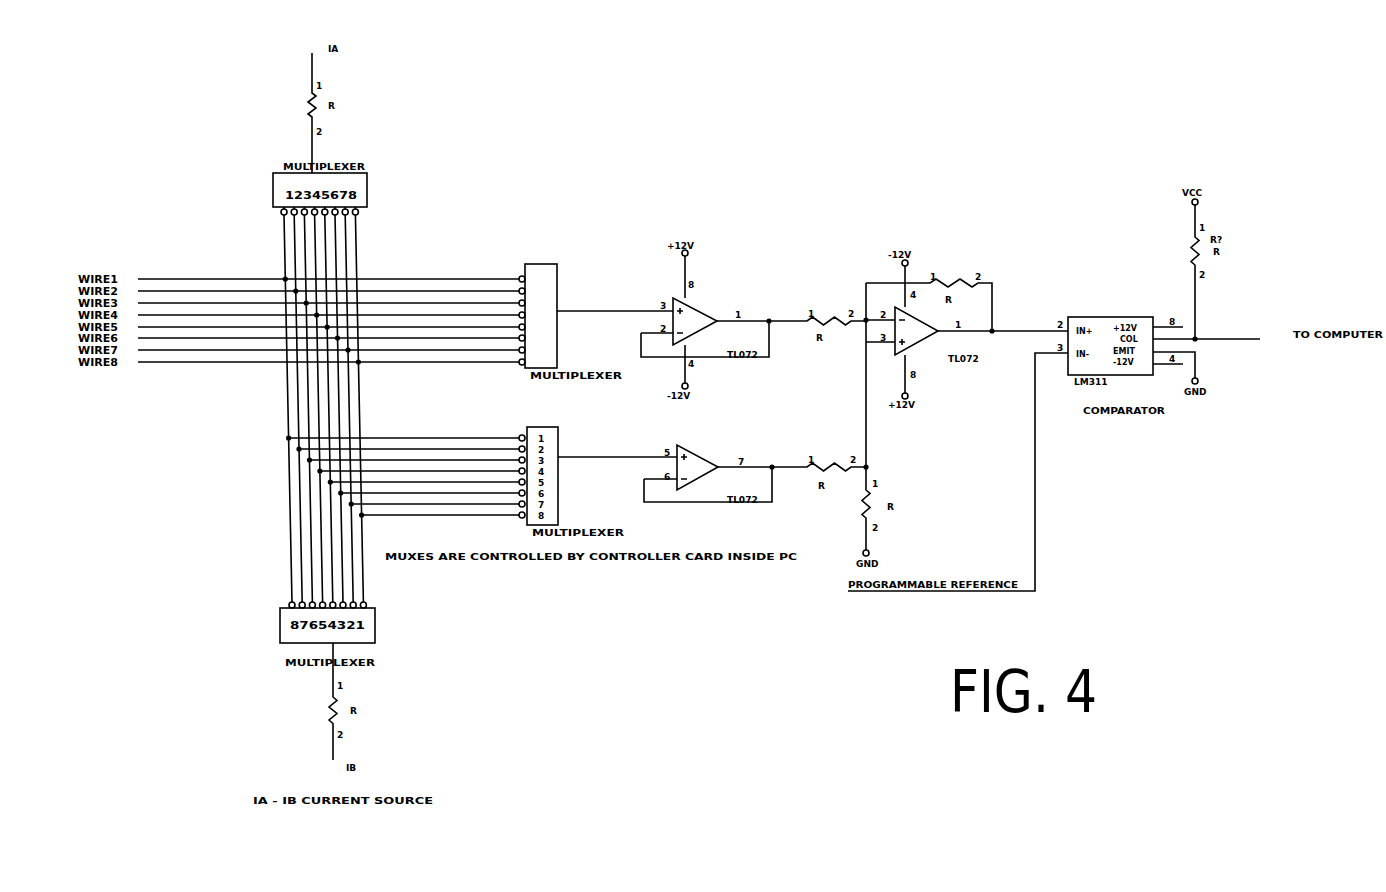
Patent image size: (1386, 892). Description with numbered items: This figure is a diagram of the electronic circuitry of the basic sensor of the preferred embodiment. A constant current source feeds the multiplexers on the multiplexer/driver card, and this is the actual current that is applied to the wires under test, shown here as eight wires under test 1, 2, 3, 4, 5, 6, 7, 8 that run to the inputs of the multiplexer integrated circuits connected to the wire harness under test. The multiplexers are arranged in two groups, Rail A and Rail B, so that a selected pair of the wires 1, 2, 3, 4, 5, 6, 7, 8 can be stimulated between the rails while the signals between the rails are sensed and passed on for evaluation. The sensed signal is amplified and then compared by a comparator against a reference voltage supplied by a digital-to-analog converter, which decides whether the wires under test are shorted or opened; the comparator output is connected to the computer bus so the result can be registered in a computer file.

The wire 1 (multiplexer input 1) 1 is at (340, 280).
The wire 2 (multiplexer input 2) 2 is at (340, 292).
The wire 3 (multiplexer input 3) 3 is at (340, 304).
The wire 4 (multiplexer input 4) 4 is at (340, 316).
The wire 5 (multiplexer input 5) 5 is at (340, 328).
The wire 6 (multiplexer input 6) 6 is at (340, 339).
The wire 7 (multiplexer input 7) 7 is at (340, 351).
The wire 8 (multiplexer input 8) 8 is at (340, 363).